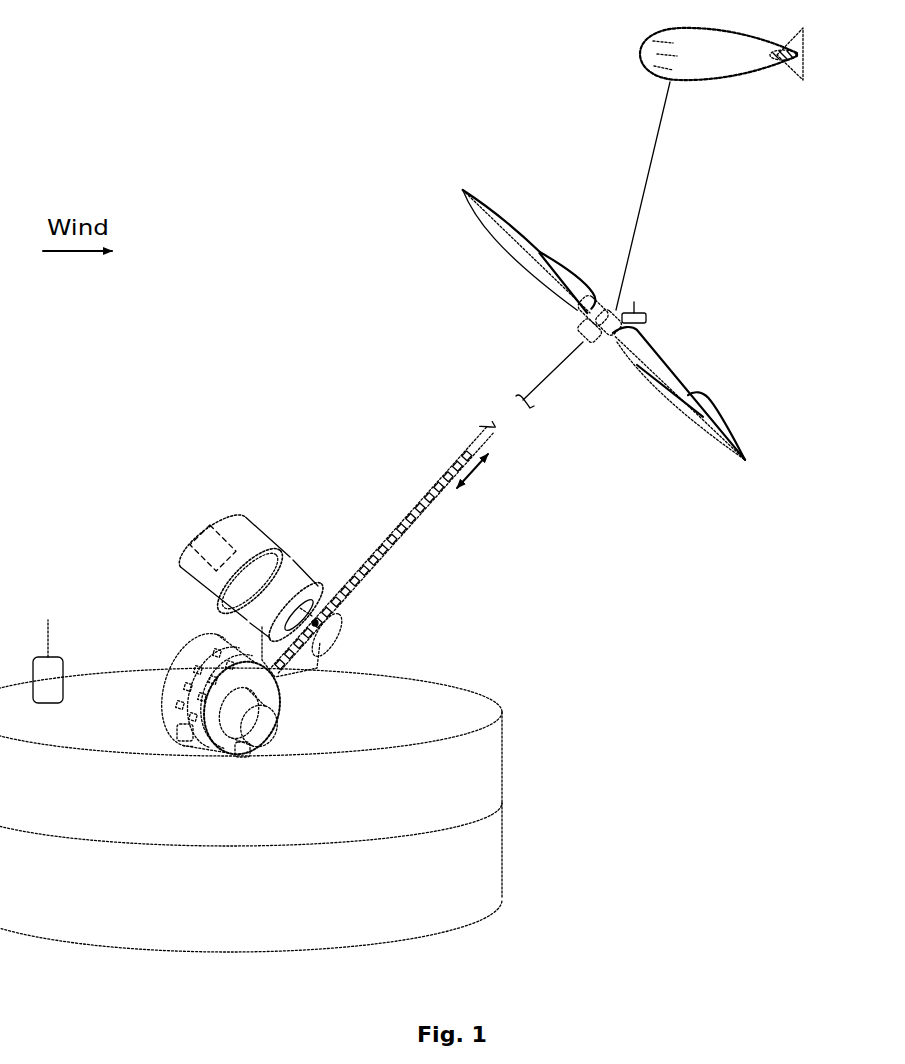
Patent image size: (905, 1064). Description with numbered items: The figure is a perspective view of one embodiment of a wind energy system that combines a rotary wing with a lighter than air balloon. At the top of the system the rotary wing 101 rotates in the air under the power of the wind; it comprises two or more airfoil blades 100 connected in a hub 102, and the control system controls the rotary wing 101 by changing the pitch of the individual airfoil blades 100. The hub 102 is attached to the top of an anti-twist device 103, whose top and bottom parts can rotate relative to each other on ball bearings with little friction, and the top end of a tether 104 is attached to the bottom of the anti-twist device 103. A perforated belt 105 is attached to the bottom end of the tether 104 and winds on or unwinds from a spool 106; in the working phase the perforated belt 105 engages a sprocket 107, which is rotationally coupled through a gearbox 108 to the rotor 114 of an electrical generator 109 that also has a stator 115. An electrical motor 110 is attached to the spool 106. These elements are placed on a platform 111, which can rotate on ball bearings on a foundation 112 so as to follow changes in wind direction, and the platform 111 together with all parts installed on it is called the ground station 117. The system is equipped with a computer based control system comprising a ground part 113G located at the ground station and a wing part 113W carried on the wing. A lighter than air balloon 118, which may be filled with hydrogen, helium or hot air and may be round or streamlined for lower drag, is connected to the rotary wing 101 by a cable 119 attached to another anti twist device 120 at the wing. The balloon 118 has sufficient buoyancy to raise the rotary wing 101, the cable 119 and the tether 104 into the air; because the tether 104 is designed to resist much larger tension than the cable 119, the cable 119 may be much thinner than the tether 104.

The airfoil blades 100 is at (498, 236).
The rotary wing 101 is at (420, 207).
The hub 102 is at (604, 332).
The anti-twist device 103 is at (580, 326).
The tether 104 is at (546, 380).
The perforated belt 105 is at (408, 505).
The spool 106 is at (195, 652).
The sprocket 107 is at (346, 636).
The gearbox 108 is at (296, 572).
The electrical generator 109 is at (243, 529).
The electrical motor 110 is at (276, 718).
The platform 111 is at (492, 752).
The foundation 112 is at (495, 827).
The ground part of control system 113G is at (53, 685).
The wing part of control system 113W is at (648, 318).
The rotor 114 is at (206, 525).
The stator 115 is at (185, 535).
The ground station 117 is at (102, 458).
The lighter than air balloon 118 is at (718, 67).
The cable 119 is at (648, 210).
The anti twist device 120 is at (605, 298).